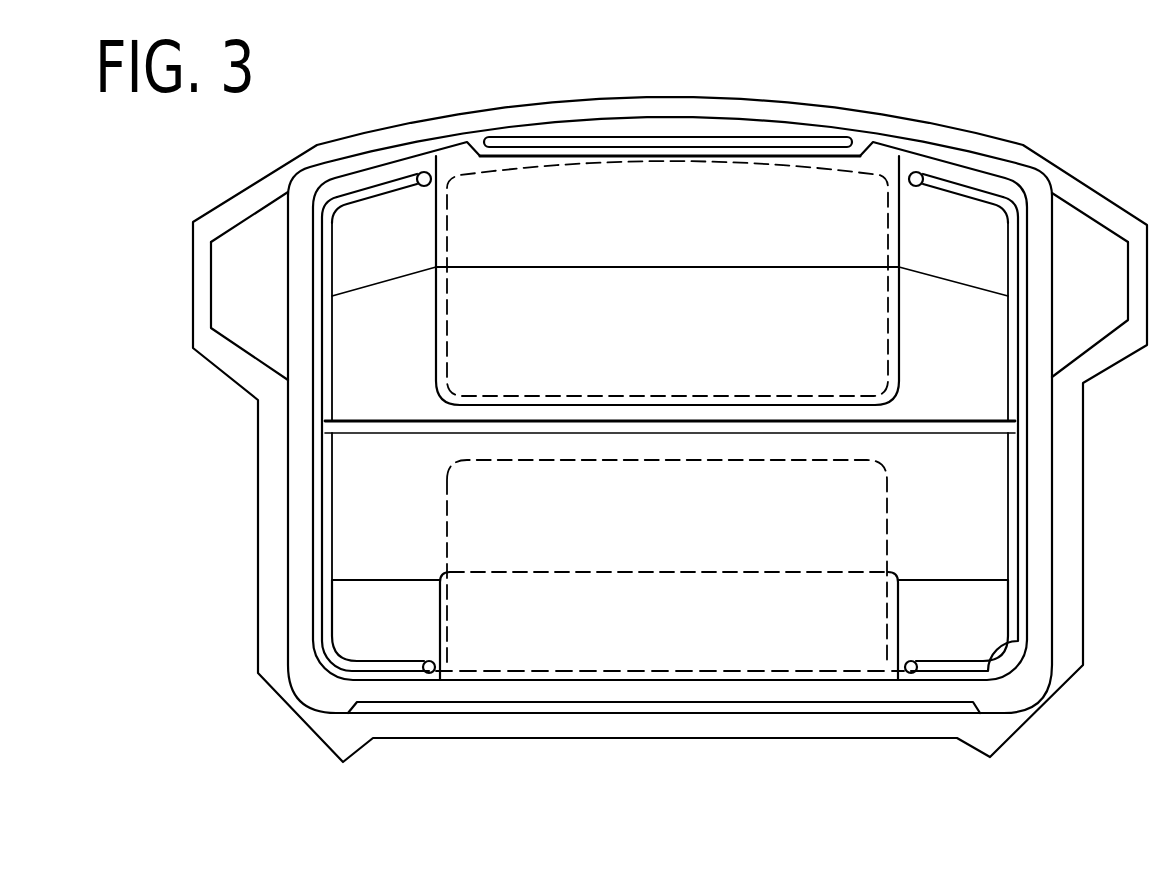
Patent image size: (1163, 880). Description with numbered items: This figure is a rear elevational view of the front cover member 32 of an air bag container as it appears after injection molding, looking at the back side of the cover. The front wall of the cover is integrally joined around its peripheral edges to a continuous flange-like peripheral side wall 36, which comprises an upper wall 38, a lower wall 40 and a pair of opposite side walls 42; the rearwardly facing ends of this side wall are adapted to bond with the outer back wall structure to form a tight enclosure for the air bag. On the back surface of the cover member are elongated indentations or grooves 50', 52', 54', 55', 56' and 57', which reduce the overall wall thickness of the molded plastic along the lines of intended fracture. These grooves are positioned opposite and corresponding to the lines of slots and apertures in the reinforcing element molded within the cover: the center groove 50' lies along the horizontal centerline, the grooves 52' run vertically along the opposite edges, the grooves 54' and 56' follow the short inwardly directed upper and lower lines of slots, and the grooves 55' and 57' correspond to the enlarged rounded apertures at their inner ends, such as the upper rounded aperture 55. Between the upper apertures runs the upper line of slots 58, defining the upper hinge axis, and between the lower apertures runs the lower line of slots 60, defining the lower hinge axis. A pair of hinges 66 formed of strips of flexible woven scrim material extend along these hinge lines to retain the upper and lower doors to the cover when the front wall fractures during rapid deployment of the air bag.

The front cover member 32 is at (901, 746).
The peripheral side wall 36 is at (283, 520).
The upper wall 38 is at (682, 136).
The lower wall 40 is at (515, 690).
The side walls 42 is at (318, 428).
The groove 50' is at (670, 463).
The groove 52' is at (669, 401).
The groove 54' is at (670, 214).
The enlarged rounded aperture 55 is at (458, 195).
The groove 55' is at (864, 202).
The groove 56' is at (670, 624).
The groove 57' is at (670, 644).
The upper line of slots 58 is at (578, 165).
The lower line of slots 60 is at (608, 670).
The hinges 66 is at (878, 344).